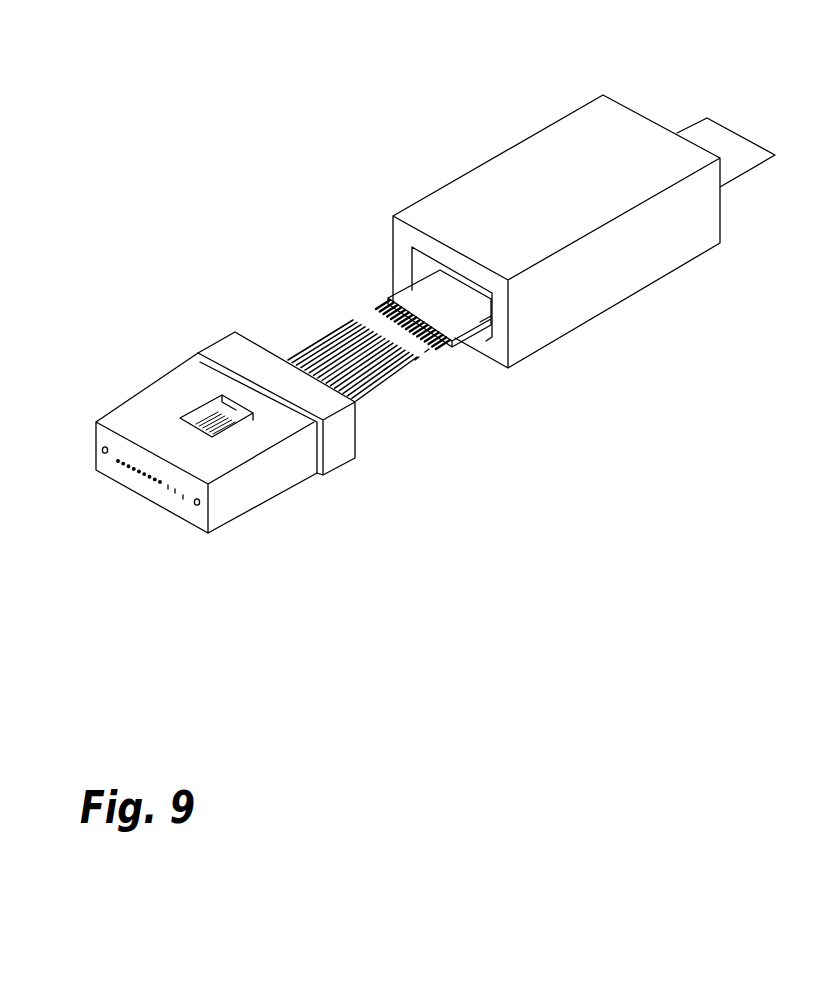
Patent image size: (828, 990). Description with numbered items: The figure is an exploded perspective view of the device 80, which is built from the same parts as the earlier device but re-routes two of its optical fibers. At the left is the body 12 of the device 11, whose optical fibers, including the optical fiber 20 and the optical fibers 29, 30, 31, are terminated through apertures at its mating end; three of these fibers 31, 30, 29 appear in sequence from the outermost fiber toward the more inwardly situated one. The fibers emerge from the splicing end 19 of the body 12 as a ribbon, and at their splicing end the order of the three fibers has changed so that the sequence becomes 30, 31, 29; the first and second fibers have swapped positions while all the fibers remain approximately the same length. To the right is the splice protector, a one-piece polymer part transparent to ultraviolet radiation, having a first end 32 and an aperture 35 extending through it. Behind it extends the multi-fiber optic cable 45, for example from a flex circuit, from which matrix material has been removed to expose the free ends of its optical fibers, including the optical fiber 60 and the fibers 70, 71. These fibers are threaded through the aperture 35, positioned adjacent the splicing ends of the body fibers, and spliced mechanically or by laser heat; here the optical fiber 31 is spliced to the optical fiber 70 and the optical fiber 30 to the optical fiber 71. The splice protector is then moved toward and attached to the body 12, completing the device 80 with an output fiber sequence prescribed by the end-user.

The device 80 is at (382, 31).
The device 11 is at (118, 412).
The body 12 is at (233, 518).
The splicing end 19 is at (246, 339).
The optical fiber 20 is at (337, 330).
The optical fiber 29 is at (168, 488).
The optical fiber 30 is at (548, 123).
The optical fiber 31 is at (183, 496).
The first end 32 is at (403, 238).
The aperture 35 is at (483, 325).
The multi-fiber optic cable 45 is at (691, 123).
The optical fiber 60 is at (367, 313).
The optical fiber 70 is at (447, 345).
The optical fiber 71 is at (437, 350).